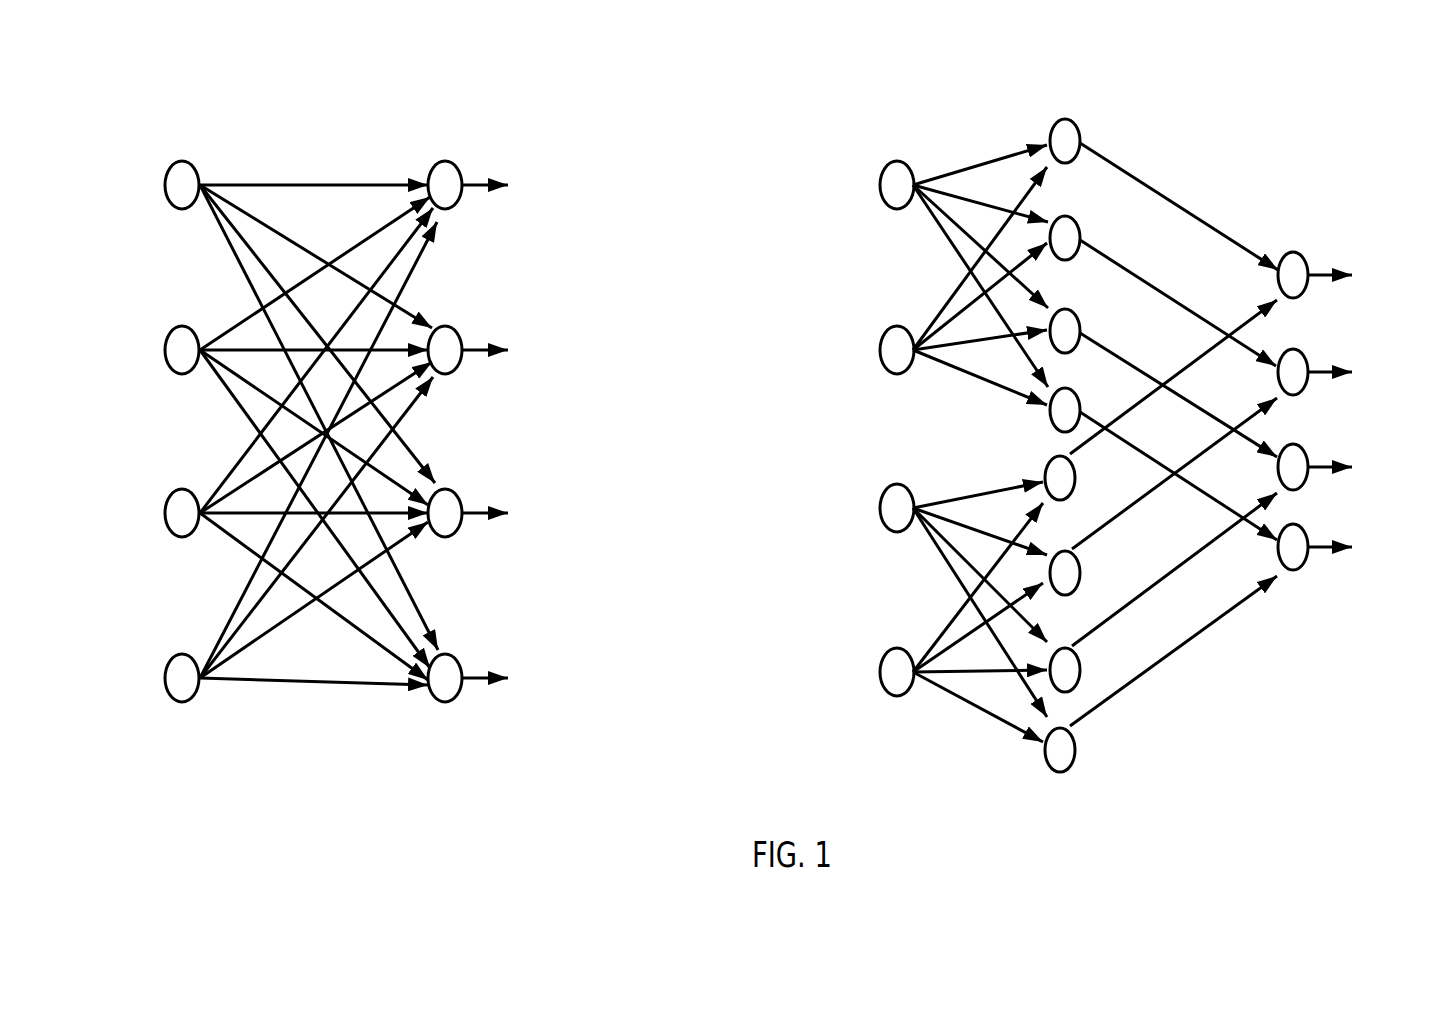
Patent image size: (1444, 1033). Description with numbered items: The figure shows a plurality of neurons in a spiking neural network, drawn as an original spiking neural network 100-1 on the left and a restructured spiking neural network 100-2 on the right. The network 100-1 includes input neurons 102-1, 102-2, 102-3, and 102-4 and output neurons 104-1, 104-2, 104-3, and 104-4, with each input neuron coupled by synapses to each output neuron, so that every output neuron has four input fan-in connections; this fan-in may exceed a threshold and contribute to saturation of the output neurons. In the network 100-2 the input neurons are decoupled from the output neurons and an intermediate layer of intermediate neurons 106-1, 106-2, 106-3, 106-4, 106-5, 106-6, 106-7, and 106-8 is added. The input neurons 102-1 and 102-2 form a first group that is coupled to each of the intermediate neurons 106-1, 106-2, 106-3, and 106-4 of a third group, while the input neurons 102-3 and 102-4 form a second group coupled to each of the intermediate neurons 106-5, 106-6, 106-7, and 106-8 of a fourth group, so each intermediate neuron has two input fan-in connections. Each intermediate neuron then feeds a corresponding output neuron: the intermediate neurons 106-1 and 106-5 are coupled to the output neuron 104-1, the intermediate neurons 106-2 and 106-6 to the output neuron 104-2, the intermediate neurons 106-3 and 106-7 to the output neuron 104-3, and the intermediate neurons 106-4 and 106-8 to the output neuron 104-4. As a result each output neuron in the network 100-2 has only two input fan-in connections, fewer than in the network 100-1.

The original spiking neural network 100-1 is at (373, 68).
The restructured spiking neural network 100-2 is at (1250, 75).
The input neuron 102-1 is at (178, 160).
The input neuron 102-2 is at (176, 326).
The input neuron 102-3 is at (176, 490).
The input neuron 102-4 is at (176, 655).
The output neuron 104-1 is at (452, 162).
The output neuron 104-2 is at (452, 327).
The output neuron 104-3 is at (452, 490).
The output neuron 104-4 is at (452, 655).
The intermediate neuron 106-1 is at (1078, 124).
The intermediate neuron 106-2 is at (1078, 222).
The intermediate neuron 106-3 is at (1078, 317).
The intermediate neuron 106-4 is at (1078, 395).
The intermediate neuron 106-5 is at (1075, 484).
The intermediate neuron 106-6 is at (1078, 558).
The intermediate neuron 106-7 is at (1078, 656).
The intermediate neuron 106-8 is at (1074, 740).